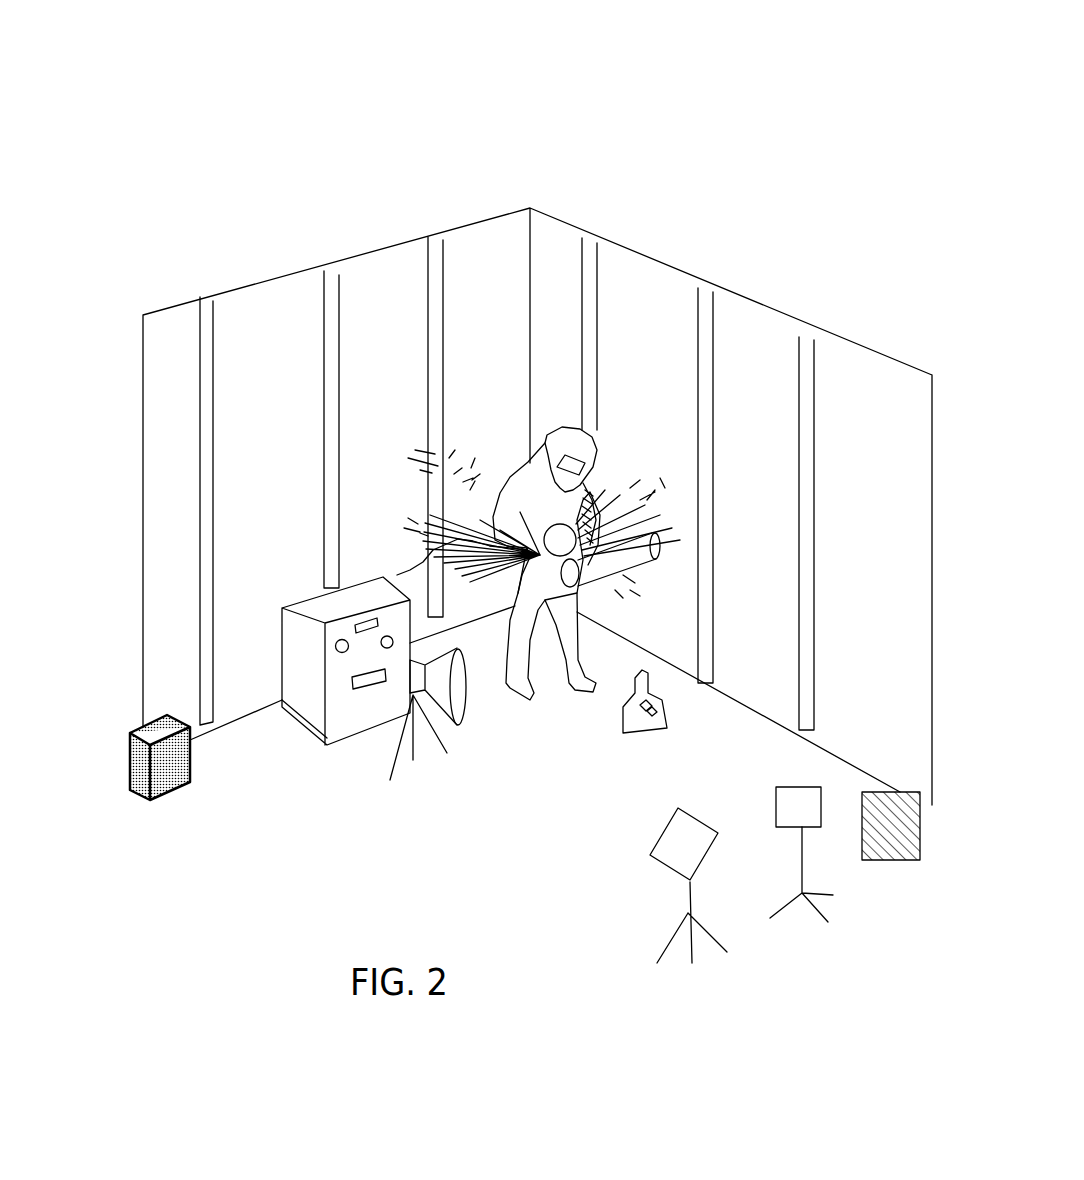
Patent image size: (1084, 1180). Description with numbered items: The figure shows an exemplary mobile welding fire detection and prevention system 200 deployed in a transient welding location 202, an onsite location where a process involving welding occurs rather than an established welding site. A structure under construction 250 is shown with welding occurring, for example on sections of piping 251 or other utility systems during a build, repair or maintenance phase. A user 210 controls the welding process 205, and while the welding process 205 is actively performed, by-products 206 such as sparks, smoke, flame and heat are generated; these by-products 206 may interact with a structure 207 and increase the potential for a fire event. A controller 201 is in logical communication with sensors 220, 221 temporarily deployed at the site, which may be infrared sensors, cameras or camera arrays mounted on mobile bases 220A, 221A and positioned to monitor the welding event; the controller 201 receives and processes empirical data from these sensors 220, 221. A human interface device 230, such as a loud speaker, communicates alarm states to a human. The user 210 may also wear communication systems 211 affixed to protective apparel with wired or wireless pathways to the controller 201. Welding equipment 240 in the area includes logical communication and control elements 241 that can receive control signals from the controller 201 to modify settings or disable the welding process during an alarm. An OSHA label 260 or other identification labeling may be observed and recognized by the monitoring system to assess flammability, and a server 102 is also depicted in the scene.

The mobile welding fire detection and prevention system 200 is at (493, 180).
The controller 201 is at (900, 792).
The transient welding location 202 is at (433, 780).
The welding process 205 is at (573, 513).
The by-products 206 is at (480, 552).
The structure 207 is at (442, 463).
The user 210 is at (570, 430).
The communication systems 211 is at (553, 425).
The sensor 220 is at (667, 820).
The mobile base 220A is at (665, 922).
The sensor 221 is at (810, 788).
The mobile base 221A is at (831, 874).
The human interface device 230 is at (407, 697).
The welding equipment 240 is at (333, 617).
The logical communication and control elements 241 is at (308, 647).
The structure under construction 250 is at (803, 433).
The sections of piping 251 is at (633, 535).
The OSHA label 260 is at (662, 697).
The server 102 is at (162, 738).